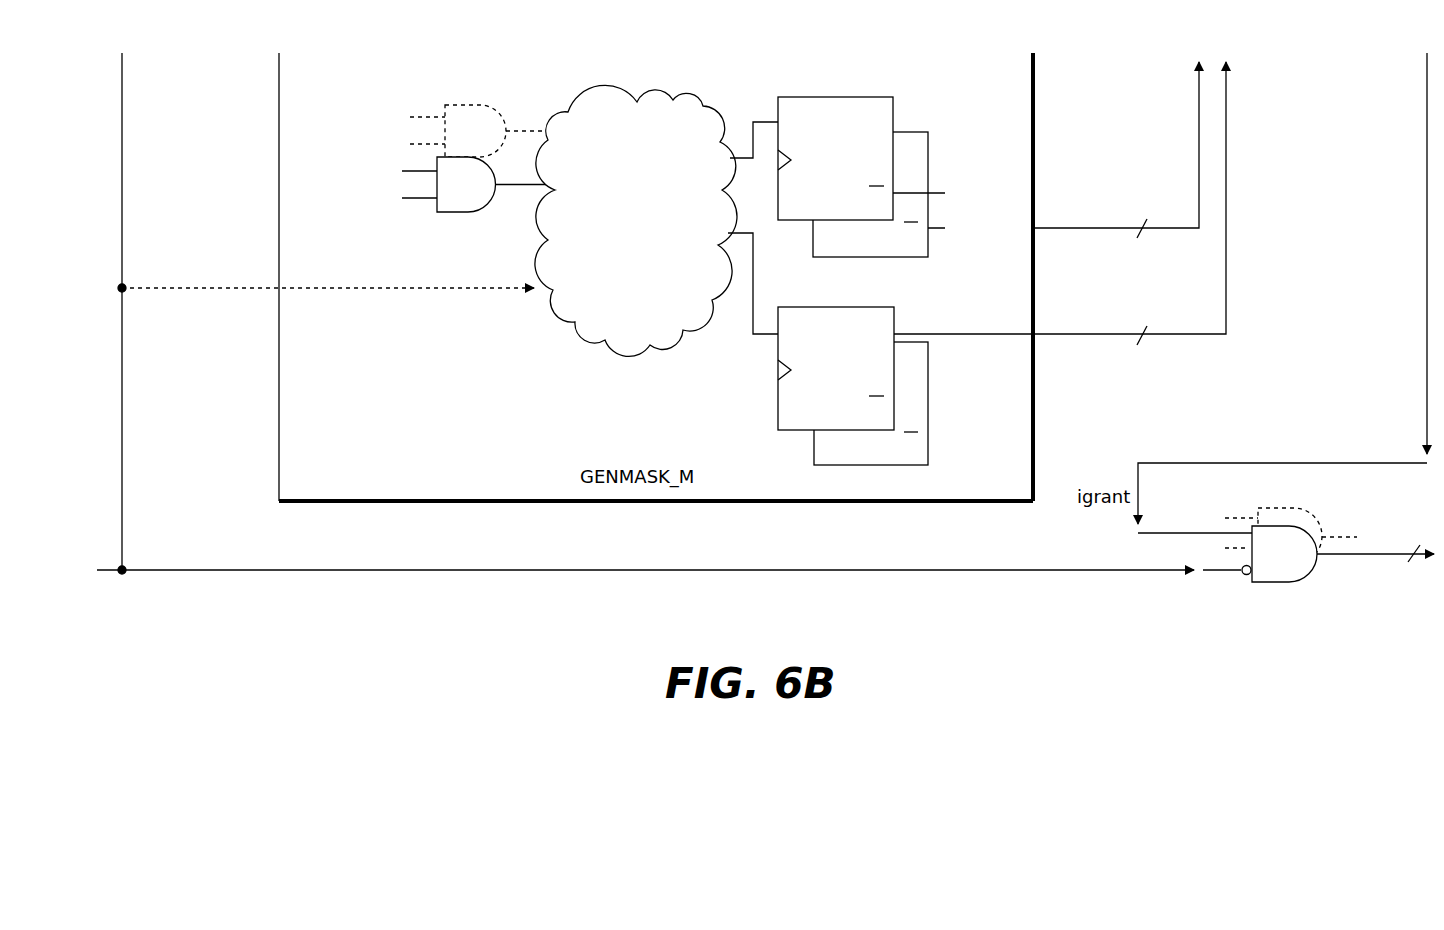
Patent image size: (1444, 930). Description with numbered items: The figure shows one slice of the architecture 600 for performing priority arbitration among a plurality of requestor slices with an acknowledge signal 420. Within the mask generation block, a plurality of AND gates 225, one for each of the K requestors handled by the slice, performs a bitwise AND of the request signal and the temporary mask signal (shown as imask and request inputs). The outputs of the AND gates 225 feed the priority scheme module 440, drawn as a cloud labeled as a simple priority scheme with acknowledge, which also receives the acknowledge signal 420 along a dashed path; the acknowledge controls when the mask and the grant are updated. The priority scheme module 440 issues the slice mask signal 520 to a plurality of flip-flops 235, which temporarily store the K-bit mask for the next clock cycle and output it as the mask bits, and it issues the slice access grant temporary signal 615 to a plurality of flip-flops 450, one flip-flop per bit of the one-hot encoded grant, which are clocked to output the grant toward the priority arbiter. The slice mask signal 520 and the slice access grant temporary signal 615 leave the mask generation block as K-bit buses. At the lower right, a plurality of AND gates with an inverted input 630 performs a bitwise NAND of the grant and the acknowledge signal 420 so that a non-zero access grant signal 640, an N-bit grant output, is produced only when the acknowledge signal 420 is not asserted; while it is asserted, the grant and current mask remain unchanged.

The architecture 600 is at (958, 618).
The acknowledge signal 420 is at (181, 290).
The plurality of AND gates 225 is at (470, 214).
The priority scheme module 440 is at (586, 336).
The plurality of flip-flops 235 is at (776, 110).
The plurality of flip-flops 450 is at (778, 416).
The slice mask signal 520 is at (1118, 232).
The slice access grant temporary signal 615 is at (1118, 338).
The access grant signal 640 is at (1393, 552).
The plurality of AND gates with an inverted input 630 is at (1282, 583).